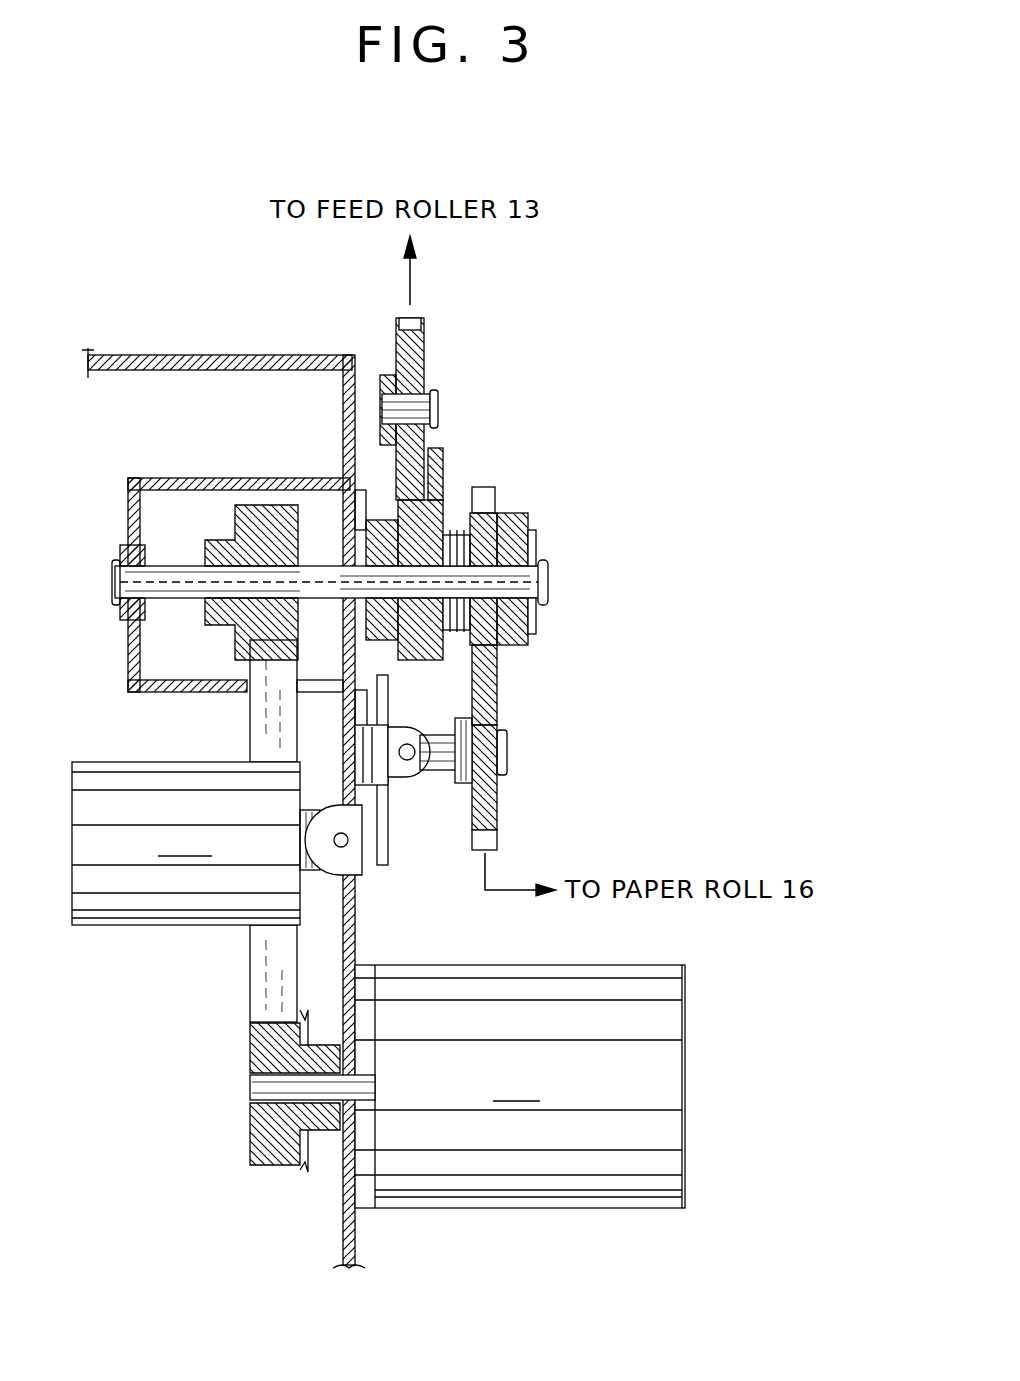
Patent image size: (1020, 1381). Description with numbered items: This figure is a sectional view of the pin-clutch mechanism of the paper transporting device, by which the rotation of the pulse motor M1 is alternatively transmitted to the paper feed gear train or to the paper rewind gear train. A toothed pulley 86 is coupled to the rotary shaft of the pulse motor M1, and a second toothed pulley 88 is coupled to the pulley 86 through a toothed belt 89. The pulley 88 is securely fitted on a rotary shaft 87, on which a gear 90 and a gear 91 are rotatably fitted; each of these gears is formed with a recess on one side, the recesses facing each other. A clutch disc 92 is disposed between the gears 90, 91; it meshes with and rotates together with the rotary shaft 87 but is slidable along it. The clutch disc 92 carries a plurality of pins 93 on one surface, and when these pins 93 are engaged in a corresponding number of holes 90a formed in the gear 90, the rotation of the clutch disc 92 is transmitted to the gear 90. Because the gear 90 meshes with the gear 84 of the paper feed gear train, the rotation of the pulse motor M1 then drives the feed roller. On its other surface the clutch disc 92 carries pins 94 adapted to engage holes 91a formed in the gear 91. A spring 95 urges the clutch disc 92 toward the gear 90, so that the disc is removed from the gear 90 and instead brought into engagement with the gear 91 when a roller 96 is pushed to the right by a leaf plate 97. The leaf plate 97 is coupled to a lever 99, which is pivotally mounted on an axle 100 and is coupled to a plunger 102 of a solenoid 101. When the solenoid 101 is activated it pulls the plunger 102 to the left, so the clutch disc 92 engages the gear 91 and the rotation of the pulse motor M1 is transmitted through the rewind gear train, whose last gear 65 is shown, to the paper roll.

The gear 65 is at (500, 806).
The gear 84 is at (425, 346).
The toothed pulley 86 is at (262, 1138).
The rotary shaft 87 is at (112, 582).
The toothed pulley 88 is at (208, 630).
The toothed belt 89 is at (262, 974).
The gear 90 is at (366, 525).
The holes 90a is at (352, 492).
The gear 91 is at (530, 527).
The holes 91a is at (484, 505).
The clutch disc 92 is at (443, 482).
The pins 93 is at (498, 660).
The pins 94 is at (455, 525).
The spring 95 is at (530, 620).
The roller 96 is at (548, 580).
The leaf plate 97 is at (352, 702).
The lever 99 is at (388, 812).
The axle 100 is at (407, 762).
The solenoid 101 is at (186, 843).
The plunger 102 is at (322, 870).
The pulse motor M1 is at (520, 1086).